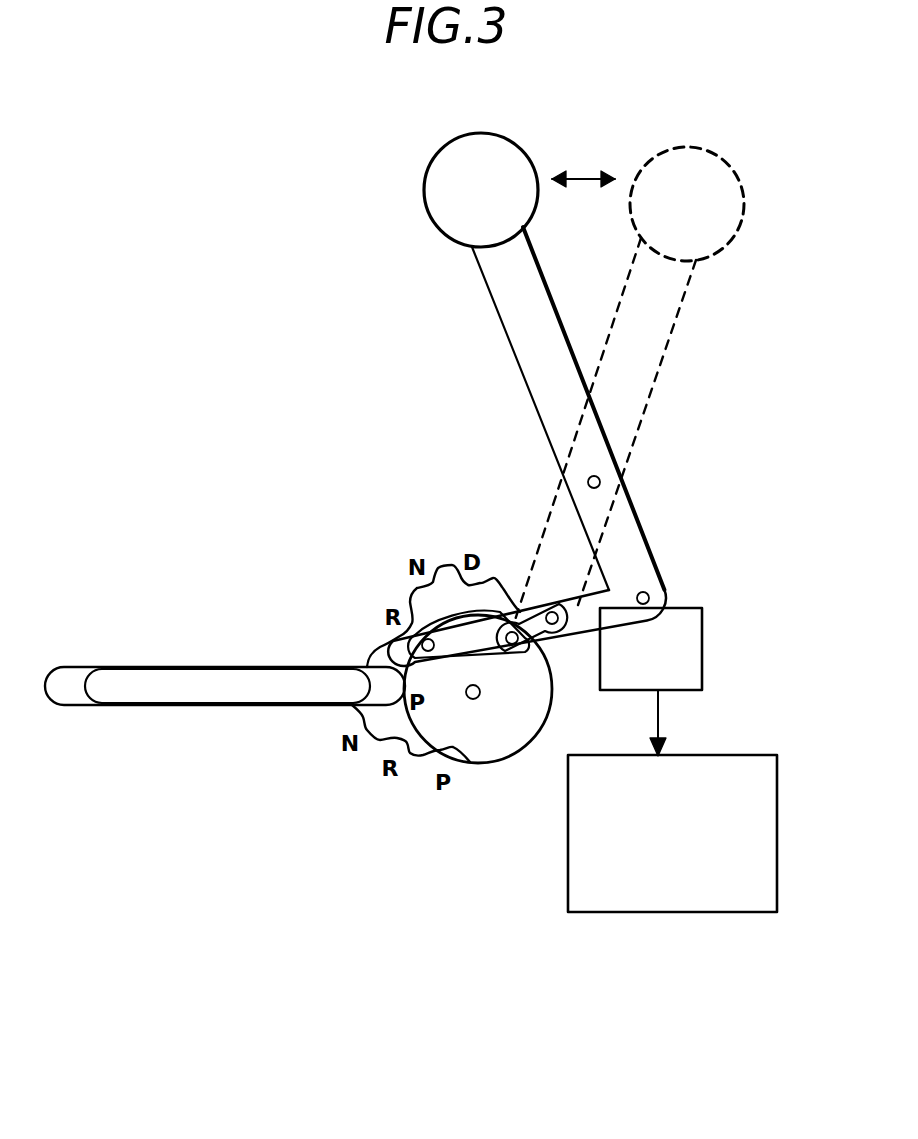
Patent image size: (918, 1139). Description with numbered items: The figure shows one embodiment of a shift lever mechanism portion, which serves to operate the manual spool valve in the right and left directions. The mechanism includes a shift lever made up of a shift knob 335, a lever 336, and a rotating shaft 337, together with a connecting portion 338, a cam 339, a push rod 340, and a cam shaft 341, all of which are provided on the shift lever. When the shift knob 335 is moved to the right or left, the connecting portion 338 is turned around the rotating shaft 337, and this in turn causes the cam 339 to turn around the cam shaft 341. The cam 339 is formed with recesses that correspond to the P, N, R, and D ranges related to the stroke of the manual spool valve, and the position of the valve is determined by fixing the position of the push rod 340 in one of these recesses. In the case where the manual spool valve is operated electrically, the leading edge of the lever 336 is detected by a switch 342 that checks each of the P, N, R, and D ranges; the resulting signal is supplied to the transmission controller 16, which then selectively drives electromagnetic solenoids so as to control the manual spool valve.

The shift knob 335 is at (455, 220).
The lever 336 is at (525, 343).
The rotating shaft 337 is at (601, 482).
The connecting portion 338 is at (588, 640).
The cam 339 is at (520, 750).
The push rod 340 is at (200, 697).
The cam shaft 341 is at (474, 700).
The switch 342 is at (700, 672).
The transmission controller 16 is at (667, 903).